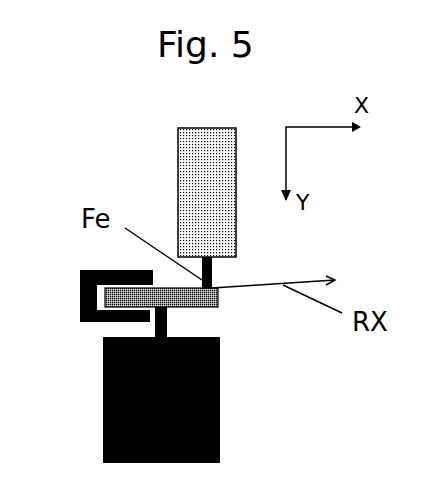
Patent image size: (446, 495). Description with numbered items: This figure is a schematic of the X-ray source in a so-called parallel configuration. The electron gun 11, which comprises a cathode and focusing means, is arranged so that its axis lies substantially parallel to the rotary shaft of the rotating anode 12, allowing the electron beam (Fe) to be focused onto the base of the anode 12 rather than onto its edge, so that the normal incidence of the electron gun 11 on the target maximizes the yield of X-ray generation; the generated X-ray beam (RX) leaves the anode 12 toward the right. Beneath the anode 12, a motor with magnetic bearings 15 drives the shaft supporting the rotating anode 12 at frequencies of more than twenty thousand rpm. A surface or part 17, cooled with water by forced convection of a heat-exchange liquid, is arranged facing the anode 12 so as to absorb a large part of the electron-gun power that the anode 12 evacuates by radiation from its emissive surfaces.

The electron gun 11 is at (178, 163).
The rotating anode 12 is at (210, 307).
The motor with magnetic bearings 15 is at (137, 408).
The surface or part arranged facing the anode 17 is at (80, 312).